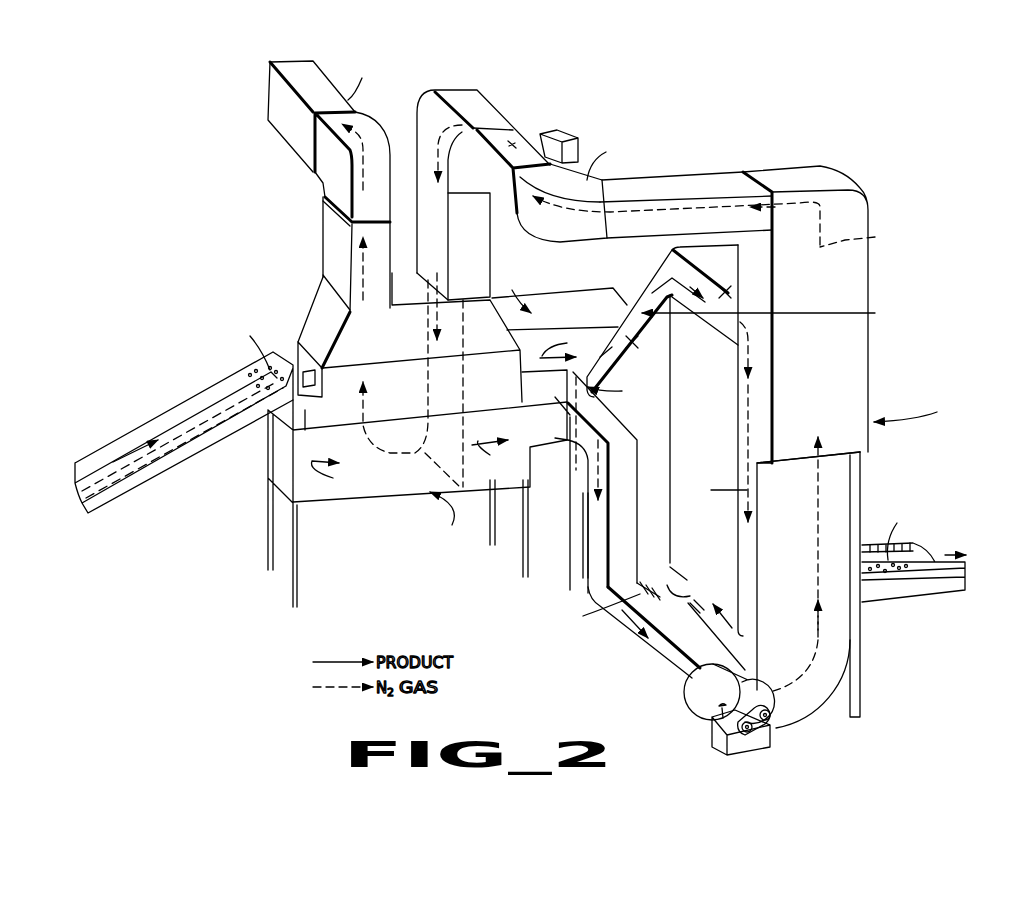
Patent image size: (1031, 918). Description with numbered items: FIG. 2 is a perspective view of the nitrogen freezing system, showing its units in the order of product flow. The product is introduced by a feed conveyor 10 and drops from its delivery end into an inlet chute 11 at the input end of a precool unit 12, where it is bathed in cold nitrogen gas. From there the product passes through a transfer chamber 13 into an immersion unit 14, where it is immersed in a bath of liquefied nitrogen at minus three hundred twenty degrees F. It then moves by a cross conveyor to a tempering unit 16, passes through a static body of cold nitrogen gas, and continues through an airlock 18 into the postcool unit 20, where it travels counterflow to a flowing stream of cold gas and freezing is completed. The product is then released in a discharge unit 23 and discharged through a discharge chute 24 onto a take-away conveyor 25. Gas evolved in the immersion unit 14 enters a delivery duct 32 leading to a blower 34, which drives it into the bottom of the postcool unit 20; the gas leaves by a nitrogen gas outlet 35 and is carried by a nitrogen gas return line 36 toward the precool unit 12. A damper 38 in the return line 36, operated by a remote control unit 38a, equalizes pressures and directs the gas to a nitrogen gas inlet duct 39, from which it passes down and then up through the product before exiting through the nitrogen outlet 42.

The feed conveyor 10 is at (129, 437).
The inlet chute 11 is at (312, 376).
The precool unit 12 is at (274, 447).
The transfer chamber 13 is at (527, 372).
The immersion unit 14 is at (589, 319).
The tempering unit 16 is at (634, 347).
The airlock 18 is at (728, 292).
The postcool unit 20 is at (869, 482).
The discharge unit 23 is at (661, 577).
The discharge chute 24 is at (656, 593).
The take-away conveyor 25 is at (917, 590).
The delivery duct 32 is at (630, 457).
The blower 34 is at (688, 697).
The nitrogen gas outlet 35 is at (870, 200).
The nitrogen gas return line 36 is at (705, 180).
The damper 38 is at (518, 143).
The remote control unit 38a is at (570, 134).
The nitrogen gas inlet duct 39 is at (480, 326).
The nitrogen outlet 42 is at (322, 299).